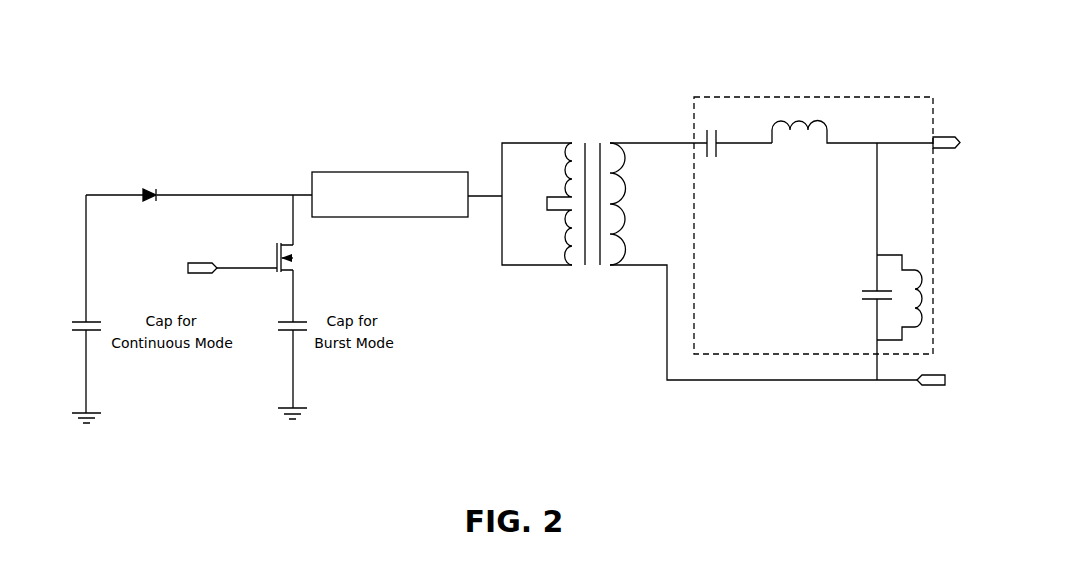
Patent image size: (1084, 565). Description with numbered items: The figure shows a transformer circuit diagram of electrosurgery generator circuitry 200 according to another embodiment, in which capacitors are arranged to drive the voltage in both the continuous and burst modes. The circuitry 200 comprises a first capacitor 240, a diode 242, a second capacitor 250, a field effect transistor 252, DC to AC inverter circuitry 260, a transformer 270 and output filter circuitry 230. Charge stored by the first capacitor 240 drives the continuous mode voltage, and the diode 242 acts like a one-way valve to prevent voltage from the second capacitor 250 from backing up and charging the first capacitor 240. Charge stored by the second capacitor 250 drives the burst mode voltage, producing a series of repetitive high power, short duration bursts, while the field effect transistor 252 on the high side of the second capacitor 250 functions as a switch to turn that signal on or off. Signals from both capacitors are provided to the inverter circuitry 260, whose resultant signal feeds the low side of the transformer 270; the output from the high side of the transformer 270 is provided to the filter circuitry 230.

The electrosurgery generator circuitry 200 is at (337, 72).
The output filter circuitry 230 is at (842, 97).
The first capacitor 240 is at (73, 307).
The diode 242 is at (142, 182).
The second capacitor 250 is at (312, 355).
The field effect transistor (FET) 252 is at (313, 263).
The DC to AC inverter circuitry 260 is at (390, 170).
The transformer 270 is at (520, 133).